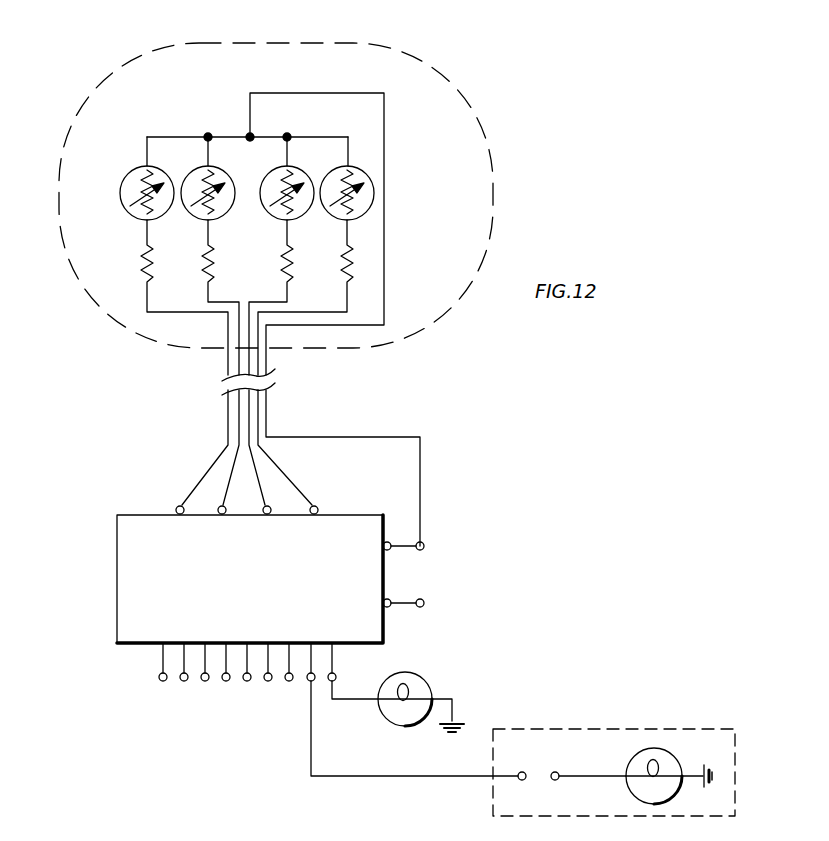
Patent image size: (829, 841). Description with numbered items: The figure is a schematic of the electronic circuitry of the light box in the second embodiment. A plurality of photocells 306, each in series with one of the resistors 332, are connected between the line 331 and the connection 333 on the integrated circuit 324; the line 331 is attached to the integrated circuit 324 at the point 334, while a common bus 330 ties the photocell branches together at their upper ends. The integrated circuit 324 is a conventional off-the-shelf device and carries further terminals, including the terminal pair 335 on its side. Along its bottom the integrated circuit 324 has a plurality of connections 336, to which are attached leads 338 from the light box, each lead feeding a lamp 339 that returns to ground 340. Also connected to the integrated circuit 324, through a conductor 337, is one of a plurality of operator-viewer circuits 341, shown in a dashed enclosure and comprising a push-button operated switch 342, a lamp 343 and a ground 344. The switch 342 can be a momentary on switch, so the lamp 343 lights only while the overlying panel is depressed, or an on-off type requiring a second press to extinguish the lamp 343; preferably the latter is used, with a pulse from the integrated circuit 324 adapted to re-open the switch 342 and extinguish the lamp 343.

The photocells 306 is at (372, 186).
The integrated circuit 324 is at (117, 606).
The common bus conductor 330 is at (220, 133).
The line 331 is at (330, 93).
The resistors 332 is at (352, 274).
The connection 333 is at (178, 506).
The attachment point 334 is at (406, 550).
The terminal pair 335 is at (406, 607).
The connections 336 is at (226, 682).
The conductor 337 is at (311, 738).
The leads 338 is at (442, 699).
The lamps 339 is at (390, 719).
The ground 340 is at (456, 724).
The operator-viewer circuits 341 is at (694, 729).
The push-button operated switch 342 is at (556, 772).
The lamp 343 is at (666, 753).
The ground 344 is at (715, 775).